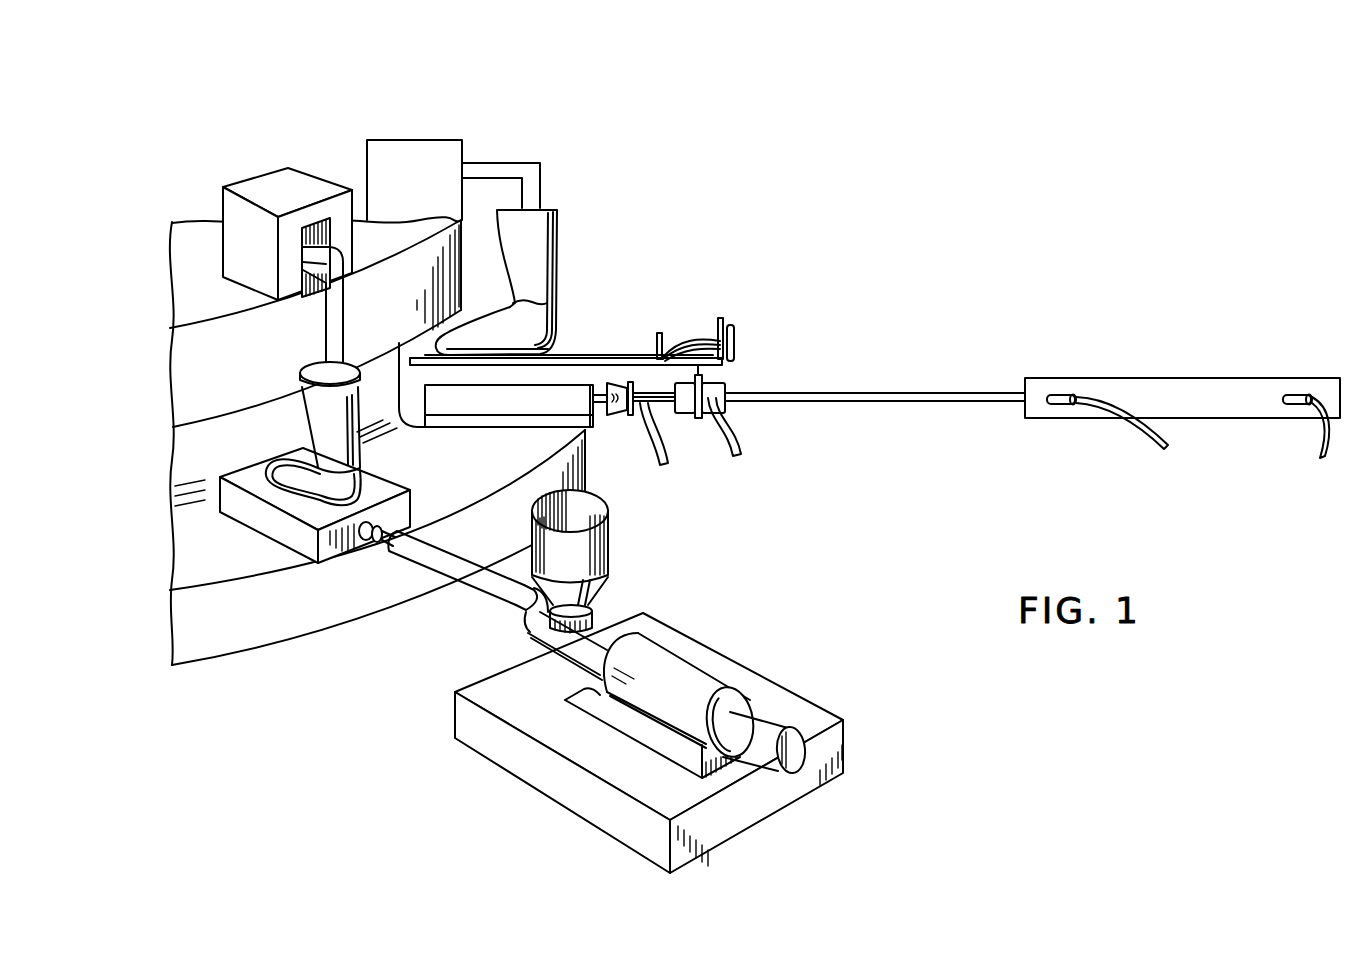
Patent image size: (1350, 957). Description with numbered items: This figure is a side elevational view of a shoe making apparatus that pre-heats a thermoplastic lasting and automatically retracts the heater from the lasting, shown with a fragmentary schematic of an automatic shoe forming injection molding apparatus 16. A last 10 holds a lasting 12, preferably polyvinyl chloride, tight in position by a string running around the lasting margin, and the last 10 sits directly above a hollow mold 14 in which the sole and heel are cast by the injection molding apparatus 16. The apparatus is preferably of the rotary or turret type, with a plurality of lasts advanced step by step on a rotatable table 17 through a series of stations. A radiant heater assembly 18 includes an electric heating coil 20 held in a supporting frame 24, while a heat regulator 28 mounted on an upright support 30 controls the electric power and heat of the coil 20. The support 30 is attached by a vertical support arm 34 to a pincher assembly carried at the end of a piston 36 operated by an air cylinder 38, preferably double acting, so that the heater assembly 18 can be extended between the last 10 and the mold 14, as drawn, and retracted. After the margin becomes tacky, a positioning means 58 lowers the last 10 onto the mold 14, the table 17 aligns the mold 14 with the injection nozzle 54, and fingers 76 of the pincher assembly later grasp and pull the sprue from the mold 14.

The last 10 is at (313, 410).
The lasting 12 is at (362, 478).
The hollow mold 14 is at (507, 407).
The injection molding apparatus 16 is at (744, 645).
The rotatable table 17 is at (262, 637).
The radiant heater assembly 18 is at (600, 312).
The electric heating coil 20 is at (580, 357).
The supporting frame 24 is at (661, 338).
The heat regulator 28 is at (735, 327).
The upright support 30 is at (719, 318).
The vertical support arm 34 is at (706, 379).
The piston 36 is at (957, 393).
The air cylinder 38 is at (1187, 382).
The injection nozzle 54 is at (378, 542).
The positioning means 58 is at (268, 186).
The fingers 76 is at (617, 420).